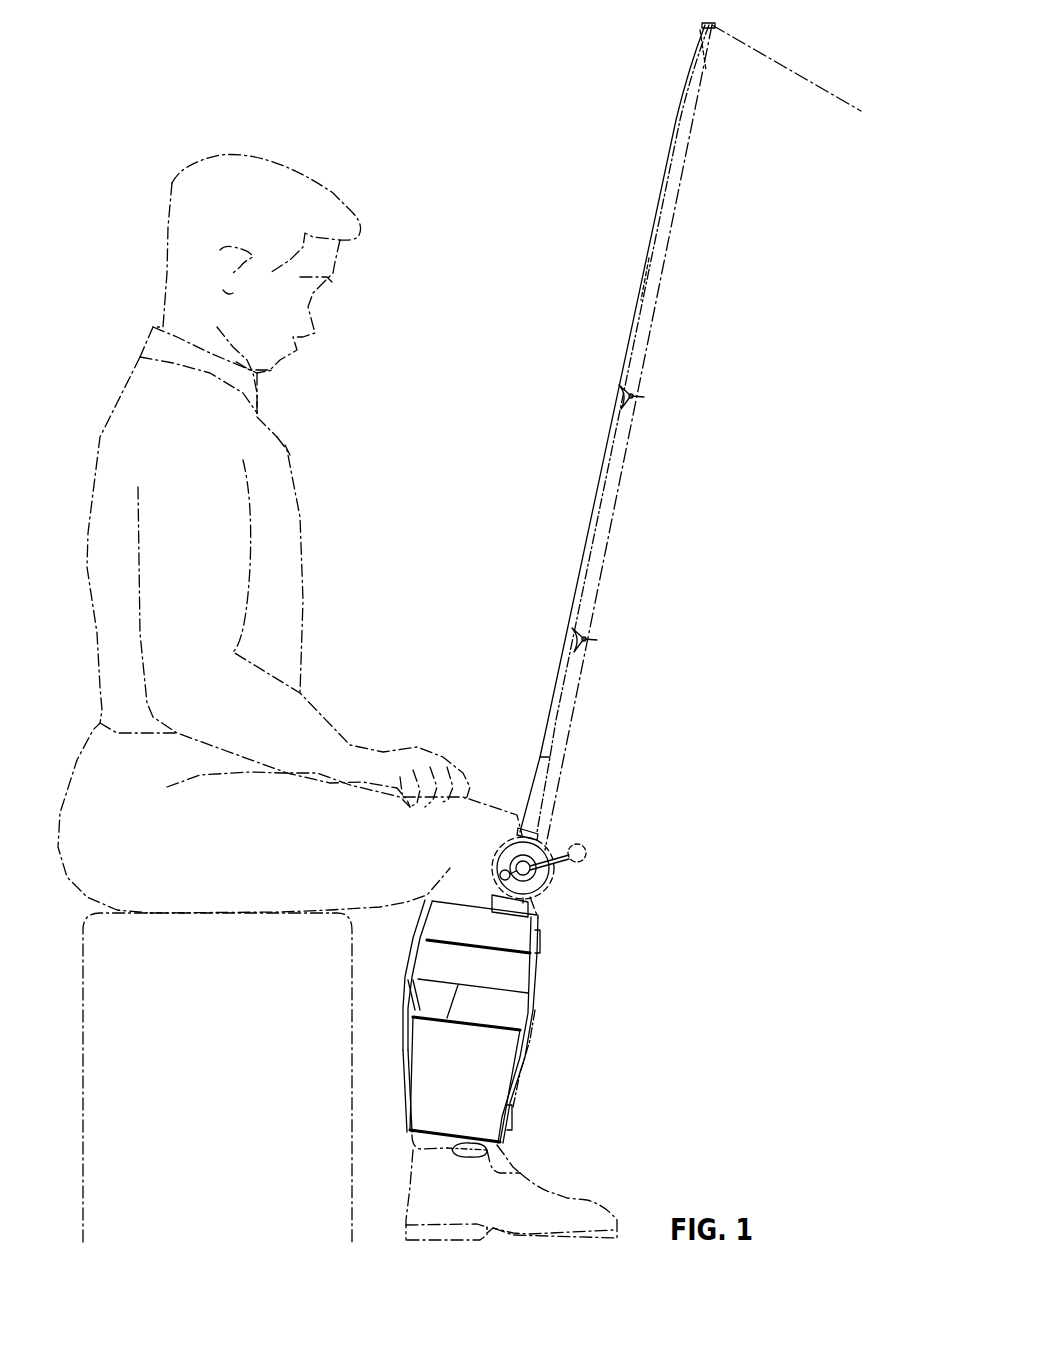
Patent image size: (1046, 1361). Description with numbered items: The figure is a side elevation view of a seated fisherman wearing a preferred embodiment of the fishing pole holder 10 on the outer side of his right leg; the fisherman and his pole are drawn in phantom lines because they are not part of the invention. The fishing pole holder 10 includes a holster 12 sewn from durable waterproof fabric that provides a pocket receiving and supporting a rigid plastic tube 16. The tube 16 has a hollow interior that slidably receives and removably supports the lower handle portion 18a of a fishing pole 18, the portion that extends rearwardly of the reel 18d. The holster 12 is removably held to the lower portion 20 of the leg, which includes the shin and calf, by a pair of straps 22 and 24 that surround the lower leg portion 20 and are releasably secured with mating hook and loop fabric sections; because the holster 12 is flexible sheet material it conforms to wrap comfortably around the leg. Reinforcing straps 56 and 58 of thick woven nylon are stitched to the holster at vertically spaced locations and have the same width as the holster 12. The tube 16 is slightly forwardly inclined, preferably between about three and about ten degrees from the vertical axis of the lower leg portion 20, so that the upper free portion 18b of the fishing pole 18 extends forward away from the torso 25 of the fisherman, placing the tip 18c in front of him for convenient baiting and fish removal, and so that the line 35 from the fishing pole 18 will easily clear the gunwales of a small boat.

The fishing pole holder 10 is at (484, 1026).
The holster 12 is at (478, 1078).
The rigid plastic tube 16 is at (490, 898).
The fishing pole 18 is at (534, 775).
The lower handle portion 18a is at (513, 1175).
The upper free portion 18b is at (648, 263).
The tip 18c is at (697, 32).
The reel 18d is at (543, 847).
The lower portion of the fisherman's leg 20 is at (533, 1042).
The upper strap 22 is at (417, 920).
The lower strap 24 is at (407, 1107).
The torso 25 is at (288, 450).
The line 35 is at (800, 80).
The top reinforcing strap 56 is at (517, 937).
The lower reinforcing strap 58 is at (507, 1007).